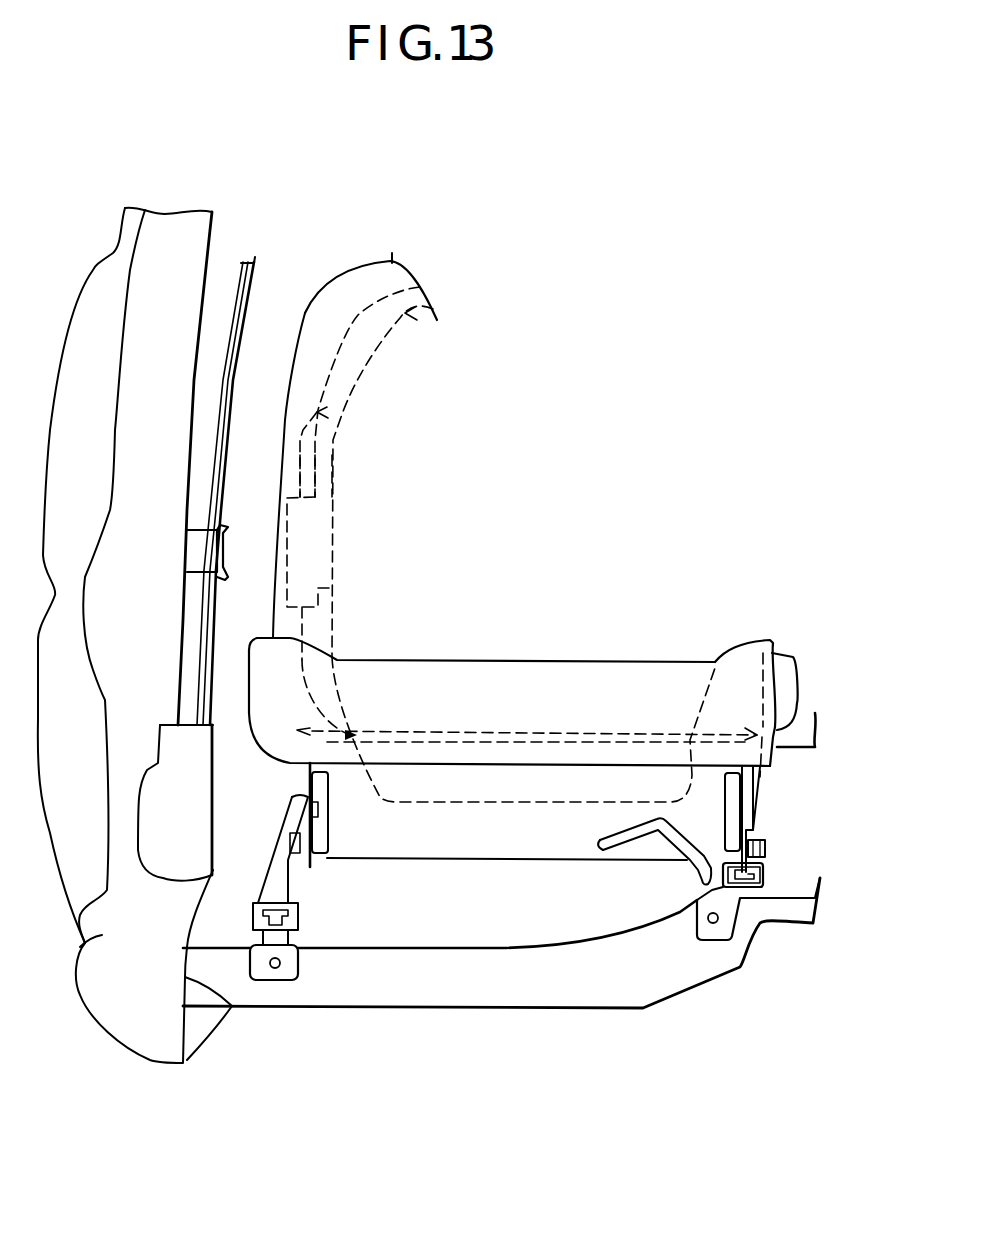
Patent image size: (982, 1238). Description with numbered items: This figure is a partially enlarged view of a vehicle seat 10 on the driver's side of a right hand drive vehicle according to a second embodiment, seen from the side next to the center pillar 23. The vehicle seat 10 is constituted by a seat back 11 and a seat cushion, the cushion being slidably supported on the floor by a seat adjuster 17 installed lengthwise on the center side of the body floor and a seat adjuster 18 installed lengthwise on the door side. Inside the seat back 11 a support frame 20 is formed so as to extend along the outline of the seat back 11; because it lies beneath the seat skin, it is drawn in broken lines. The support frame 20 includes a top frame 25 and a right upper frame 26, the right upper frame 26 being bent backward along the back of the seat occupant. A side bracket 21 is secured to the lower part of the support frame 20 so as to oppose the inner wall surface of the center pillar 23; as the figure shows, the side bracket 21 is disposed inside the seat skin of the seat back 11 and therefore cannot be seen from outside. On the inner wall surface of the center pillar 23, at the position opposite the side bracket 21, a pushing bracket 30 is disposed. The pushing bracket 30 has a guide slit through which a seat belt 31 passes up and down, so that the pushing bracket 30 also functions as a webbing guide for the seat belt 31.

The vehicle seat 10 is at (532, 503).
The seat back 11 is at (343, 272).
The seat adjuster 17 is at (797, 855).
The seat adjuster 18 is at (306, 884).
The support frame 20 is at (340, 342).
The side bracket 21 is at (317, 560).
The center pillar 23 is at (209, 229).
The top frame 25 is at (410, 316).
The right upper frame 26 is at (328, 470).
The pushing bracket 30 is at (207, 563).
The seat belt 31 is at (240, 297).